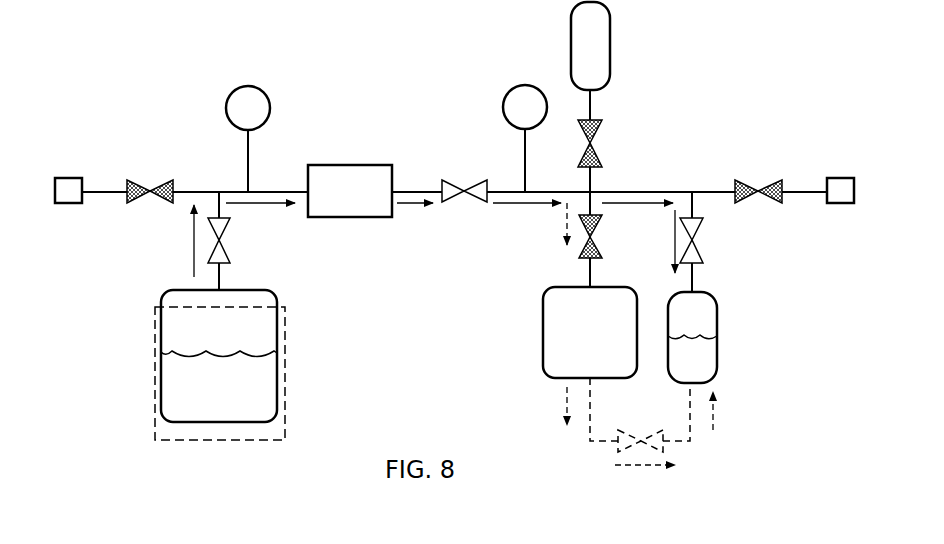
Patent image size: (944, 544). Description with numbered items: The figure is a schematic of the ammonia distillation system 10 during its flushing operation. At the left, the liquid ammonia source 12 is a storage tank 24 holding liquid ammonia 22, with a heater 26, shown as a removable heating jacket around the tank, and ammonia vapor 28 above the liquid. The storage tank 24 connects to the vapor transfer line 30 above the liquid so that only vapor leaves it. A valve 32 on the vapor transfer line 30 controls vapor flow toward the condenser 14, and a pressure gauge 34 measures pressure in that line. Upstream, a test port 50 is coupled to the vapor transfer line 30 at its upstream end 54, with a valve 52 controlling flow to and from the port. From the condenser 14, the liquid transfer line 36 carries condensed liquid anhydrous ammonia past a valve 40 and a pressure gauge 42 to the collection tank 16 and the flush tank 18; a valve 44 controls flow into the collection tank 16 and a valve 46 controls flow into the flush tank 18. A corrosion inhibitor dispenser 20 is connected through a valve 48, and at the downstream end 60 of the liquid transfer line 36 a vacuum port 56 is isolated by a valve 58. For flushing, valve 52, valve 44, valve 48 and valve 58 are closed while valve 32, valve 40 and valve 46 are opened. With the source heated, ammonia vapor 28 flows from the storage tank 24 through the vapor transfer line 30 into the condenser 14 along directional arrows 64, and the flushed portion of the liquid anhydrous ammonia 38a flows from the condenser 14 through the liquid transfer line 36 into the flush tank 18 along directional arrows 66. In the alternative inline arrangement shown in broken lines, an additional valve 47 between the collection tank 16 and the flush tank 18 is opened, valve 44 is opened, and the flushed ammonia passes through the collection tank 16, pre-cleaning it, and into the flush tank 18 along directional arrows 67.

The system 10 is at (153, 95).
The liquid ammonia source 12 is at (280, 332).
The condenser 14 is at (340, 165).
The collection tank 16 is at (543, 330).
The flush tank 18 is at (717, 336).
The corrosion inhibitor dispenser 20 is at (610, 45).
The liquid ammonia 22 is at (236, 409).
The storage tank 24 is at (160, 355).
The heater 26 is at (287, 382).
The ammonia vapor 28 is at (236, 334).
The vapor transfer line 30 is at (237, 191).
The valve 32 is at (229, 243).
The pressure gauge 34 is at (270, 109).
The liquid transfer line 36 is at (418, 191).
The flushed portion of the liquid anhydrous ammonia 38a is at (716, 366).
The valve 40 is at (452, 204).
The pressure gauge 42 is at (522, 86).
The valve 44 is at (578, 258).
The valve 46 is at (704, 232).
The additional valve 47 is at (618, 450).
The valve 48 is at (601, 157).
The test port 50 is at (66, 204).
The valve 52 is at (146, 204).
The upstream end 54 is at (110, 254).
The vacuum port 56 is at (840, 204).
The valve 58 is at (770, 201).
The downstream end 60 is at (828, 262).
The directional arrows 64 is at (190, 258).
The directional arrows 66 is at (412, 207).
The directional arrows 67 is at (563, 220).